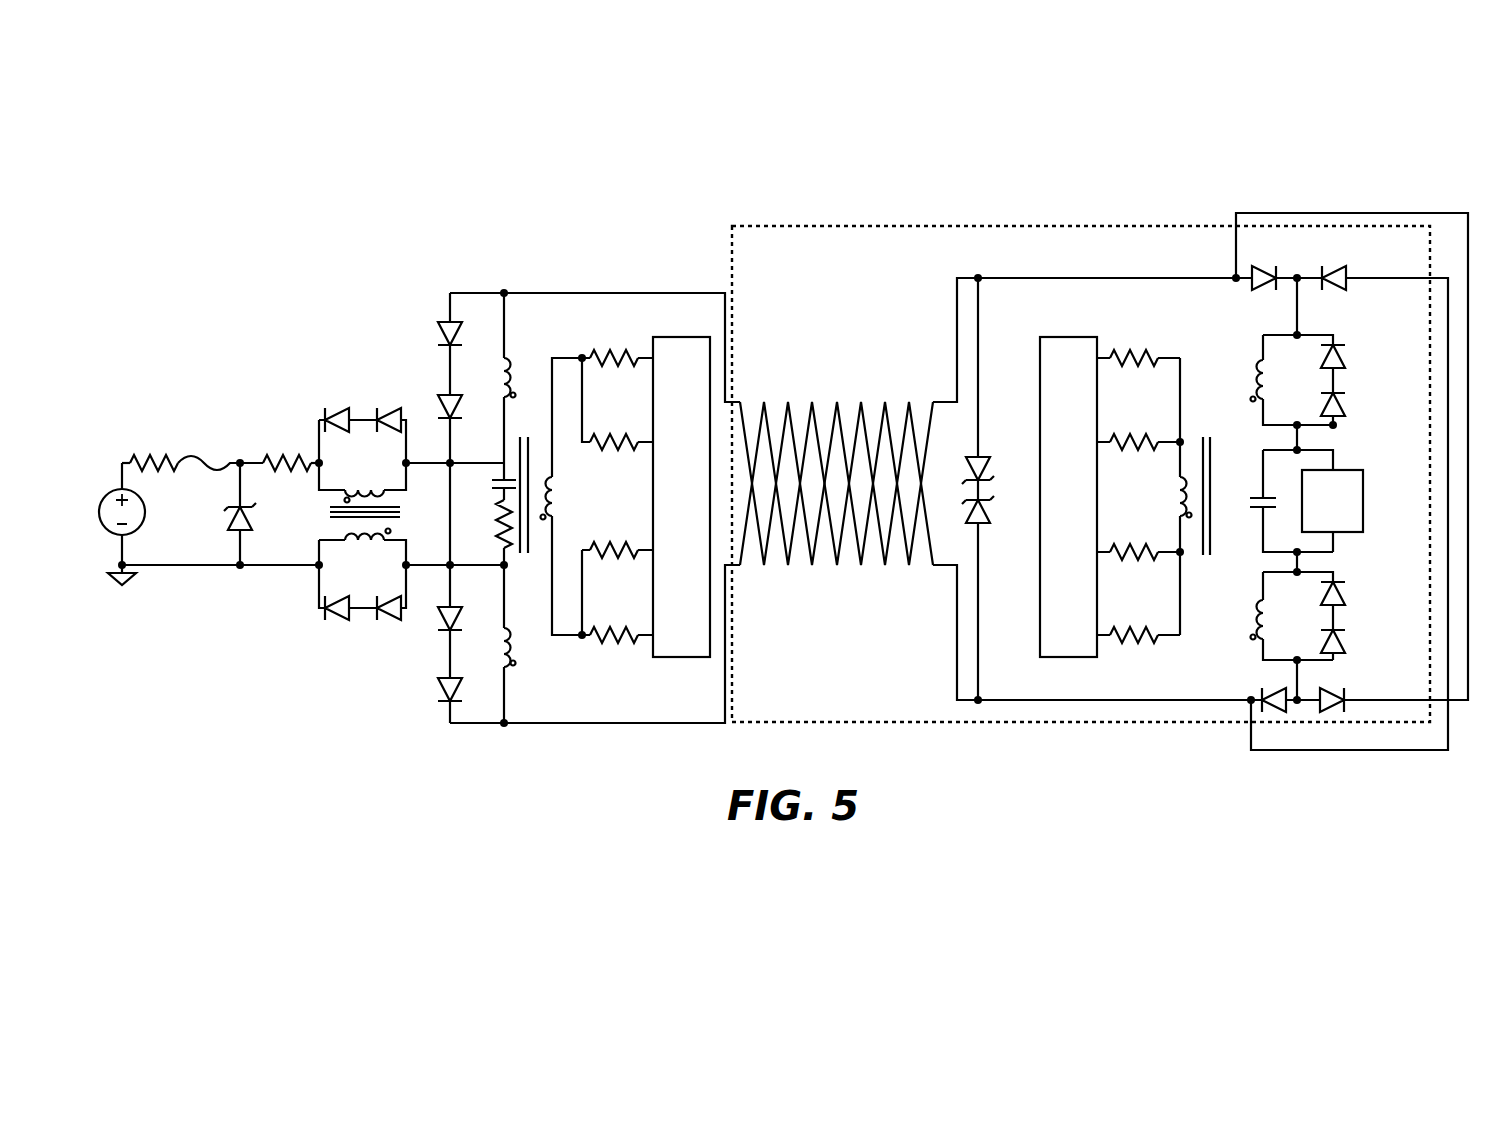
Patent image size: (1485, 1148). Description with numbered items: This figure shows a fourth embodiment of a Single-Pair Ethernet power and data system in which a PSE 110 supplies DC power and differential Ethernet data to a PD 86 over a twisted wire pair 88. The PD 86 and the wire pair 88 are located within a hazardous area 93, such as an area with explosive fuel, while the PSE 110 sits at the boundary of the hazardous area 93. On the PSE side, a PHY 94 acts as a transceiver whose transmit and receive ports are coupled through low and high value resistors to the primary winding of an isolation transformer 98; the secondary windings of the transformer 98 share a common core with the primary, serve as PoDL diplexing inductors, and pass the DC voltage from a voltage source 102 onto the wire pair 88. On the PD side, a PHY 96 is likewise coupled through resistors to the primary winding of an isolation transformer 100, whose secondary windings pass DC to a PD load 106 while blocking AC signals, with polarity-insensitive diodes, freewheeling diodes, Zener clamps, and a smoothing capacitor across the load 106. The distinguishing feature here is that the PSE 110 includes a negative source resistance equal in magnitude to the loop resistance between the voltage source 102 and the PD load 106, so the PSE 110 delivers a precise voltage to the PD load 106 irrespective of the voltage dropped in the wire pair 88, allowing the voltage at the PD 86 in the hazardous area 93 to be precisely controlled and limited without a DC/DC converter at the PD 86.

The PD 86 is at (1187, 218).
The twisted wire pair 88 is at (865, 367).
The hazardous area 93 is at (882, 724).
The PHY 94 is at (665, 337).
The PHY 96 is at (1082, 337).
The isolation transformer 98 is at (528, 382).
The isolation transformer 100 is at (1212, 370).
The voltage source 102 is at (145, 520).
The PD load 106 is at (1338, 464).
The PSE 110 is at (586, 243).